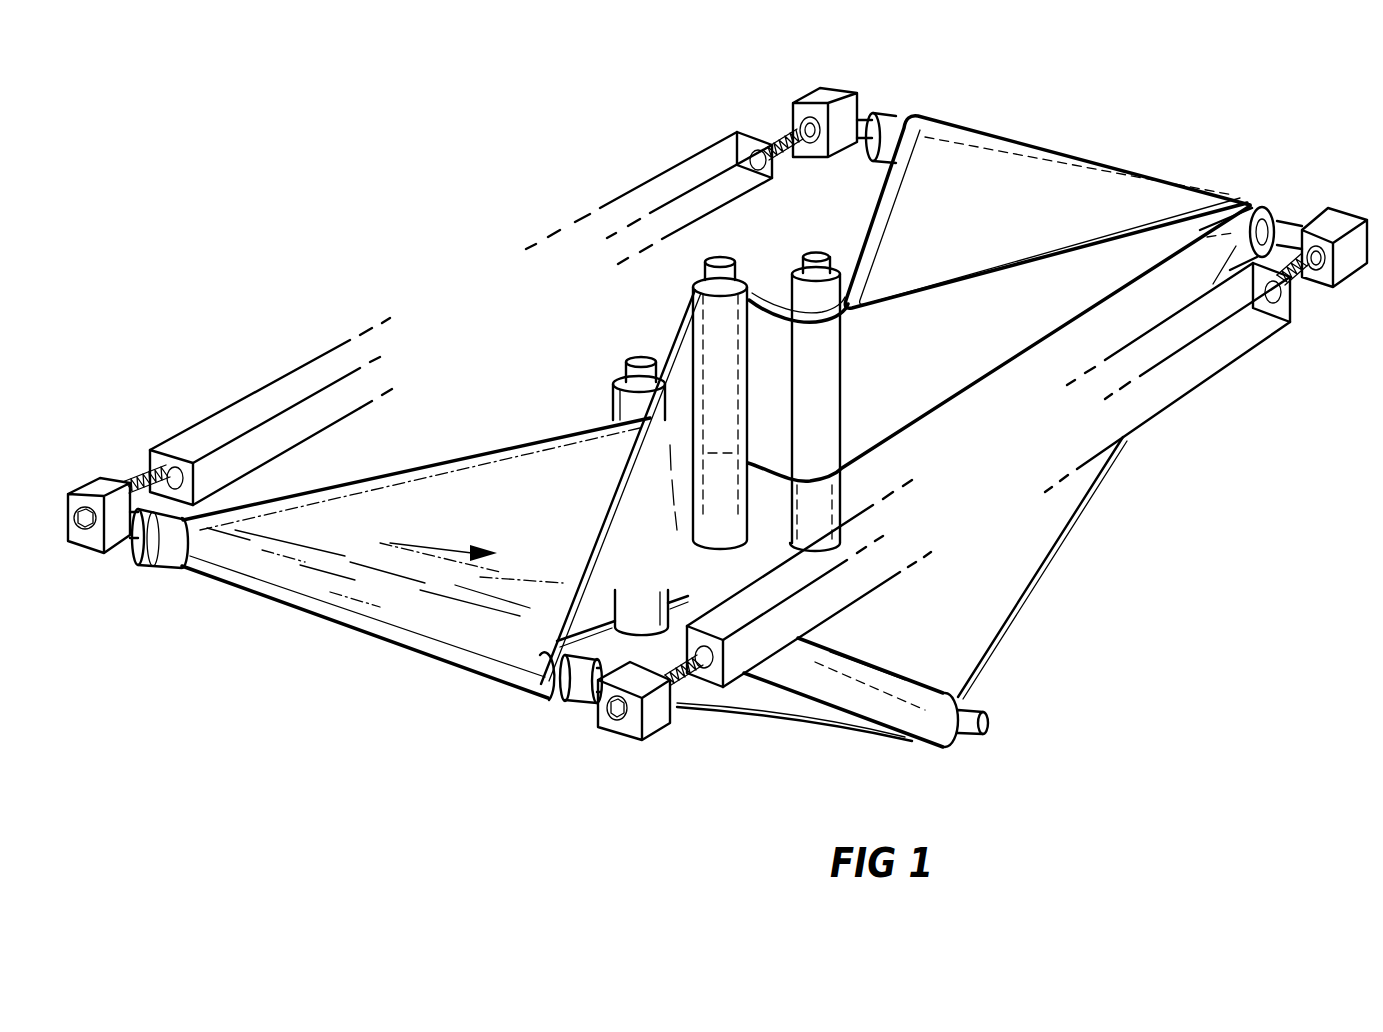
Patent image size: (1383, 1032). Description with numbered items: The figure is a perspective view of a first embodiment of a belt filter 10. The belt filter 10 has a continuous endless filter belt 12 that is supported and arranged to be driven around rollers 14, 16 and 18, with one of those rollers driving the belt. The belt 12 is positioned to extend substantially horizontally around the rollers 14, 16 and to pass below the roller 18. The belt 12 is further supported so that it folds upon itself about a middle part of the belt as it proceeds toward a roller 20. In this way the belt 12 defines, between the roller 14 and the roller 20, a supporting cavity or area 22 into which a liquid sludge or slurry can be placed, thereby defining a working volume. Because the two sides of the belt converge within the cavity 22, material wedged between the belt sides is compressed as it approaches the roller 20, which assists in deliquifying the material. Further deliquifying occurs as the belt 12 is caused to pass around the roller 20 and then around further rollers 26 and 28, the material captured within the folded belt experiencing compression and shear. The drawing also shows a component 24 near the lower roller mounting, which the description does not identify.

The belt filter 10 is at (1243, 160).
The continuous endless filter belt 12 is at (990, 208).
The roller 14 is at (555, 672).
The roller 16 is at (1247, 210).
The roller 18 is at (933, 700).
The roller 20 is at (632, 414).
The supporting cavity 22 is at (390, 543).
The adjustment nut 24 is at (604, 727).
The roller 26 is at (712, 348).
The roller 28 is at (862, 264).